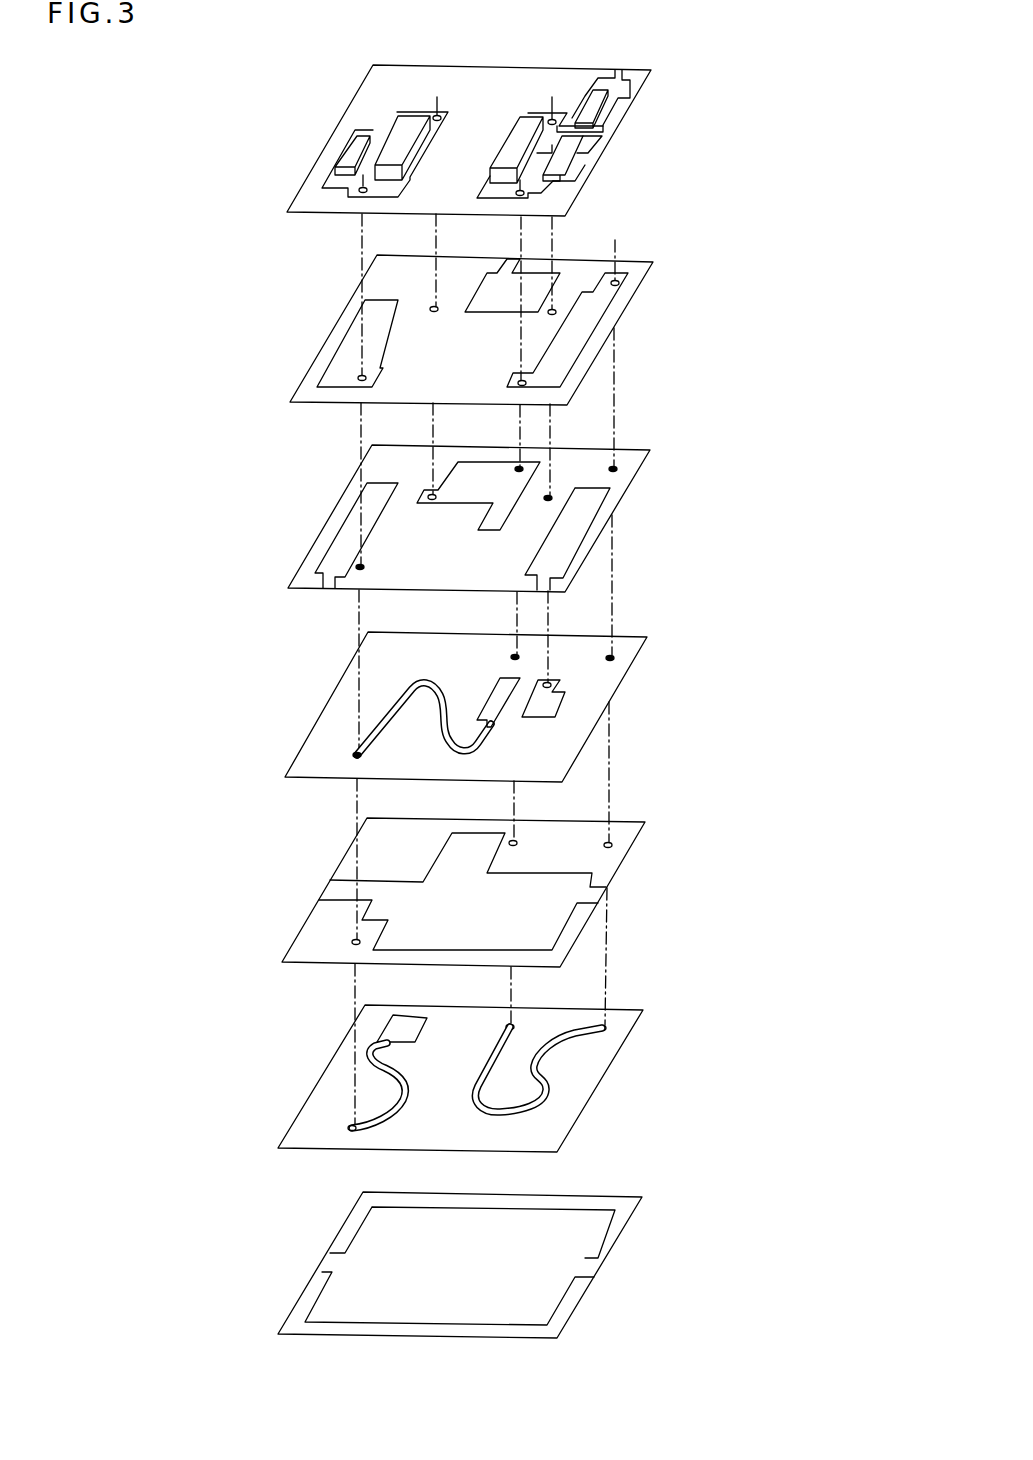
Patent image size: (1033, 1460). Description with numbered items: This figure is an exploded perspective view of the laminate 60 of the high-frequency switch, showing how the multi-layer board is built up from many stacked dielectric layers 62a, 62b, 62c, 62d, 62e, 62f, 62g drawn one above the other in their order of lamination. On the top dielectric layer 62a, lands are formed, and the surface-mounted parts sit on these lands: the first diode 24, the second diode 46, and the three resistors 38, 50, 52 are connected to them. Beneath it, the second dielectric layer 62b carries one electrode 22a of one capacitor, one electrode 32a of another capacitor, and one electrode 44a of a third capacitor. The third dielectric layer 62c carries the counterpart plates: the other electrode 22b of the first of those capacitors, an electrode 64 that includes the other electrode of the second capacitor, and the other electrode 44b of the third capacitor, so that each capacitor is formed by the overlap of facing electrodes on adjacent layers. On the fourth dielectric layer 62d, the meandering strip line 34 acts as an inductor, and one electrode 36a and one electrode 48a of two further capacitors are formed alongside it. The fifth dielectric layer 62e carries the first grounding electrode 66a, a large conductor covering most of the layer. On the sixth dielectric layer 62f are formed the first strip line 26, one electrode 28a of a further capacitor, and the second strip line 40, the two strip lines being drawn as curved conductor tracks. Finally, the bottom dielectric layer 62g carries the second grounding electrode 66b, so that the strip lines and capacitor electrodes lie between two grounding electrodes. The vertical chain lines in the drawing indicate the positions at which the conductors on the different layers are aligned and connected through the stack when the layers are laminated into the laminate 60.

The laminate 60 is at (188, 101).
The top dielectric layer 62a is at (650, 74).
The second dielectric layer 62b is at (640, 272).
The third dielectric layer 62c is at (638, 460).
The fourth dielectric layer 62d is at (634, 650).
The fifth dielectric layer 62e is at (630, 828).
The sixth dielectric layer 62f is at (632, 1018).
The bottom dielectric layer 62g is at (625, 1205).
The first diode 24 is at (413, 136).
The resistor 38 is at (353, 152).
The second diode 46 is at (522, 139).
The resistor 50 is at (565, 163).
The resistor 52 is at (593, 102).
The electrode of the capacitor 22a is at (354, 344).
The other electrode of the capacitor 22b is at (352, 530).
The electrode of the capacitor 32a is at (491, 288).
The electrode of the capacitor 44a is at (597, 312).
The other electrode of the capacitor 44b is at (588, 502).
The electrode 64 is at (480, 481).
The strip line 34 is at (407, 683).
The electrode of the capacitor 36a is at (497, 695).
The electrode of the capacitor 48a is at (548, 700).
The first grounding electrode 66a is at (552, 882).
The second grounding electrode 66b is at (583, 1238).
The electrode of the capacitor 28a is at (403, 1033).
The first strip line 26 is at (395, 1121).
The second strip line 40 is at (543, 1100).